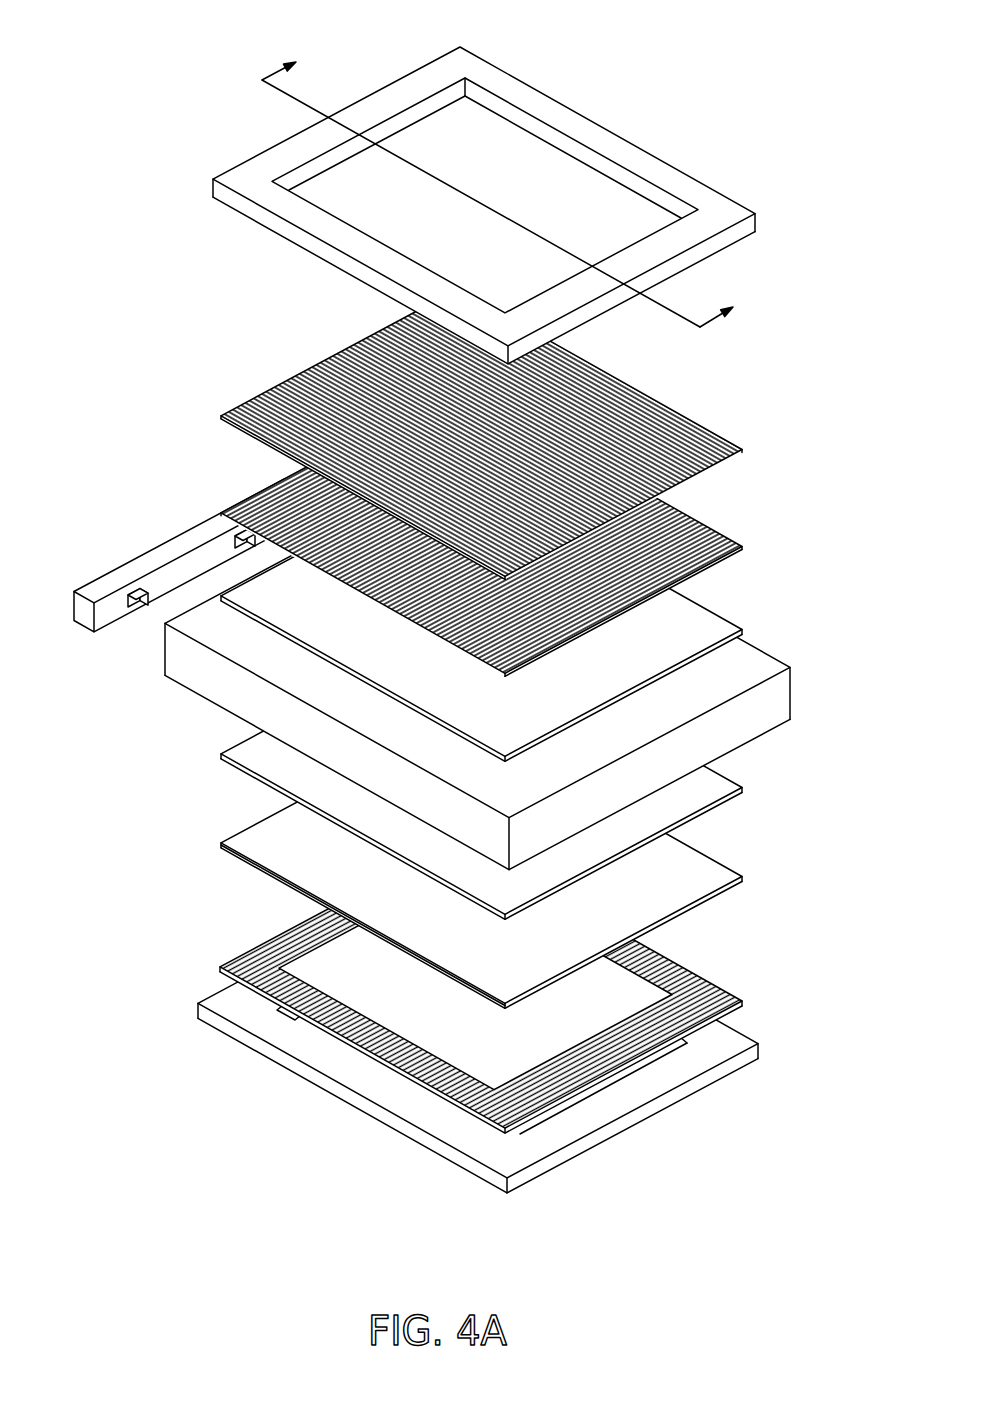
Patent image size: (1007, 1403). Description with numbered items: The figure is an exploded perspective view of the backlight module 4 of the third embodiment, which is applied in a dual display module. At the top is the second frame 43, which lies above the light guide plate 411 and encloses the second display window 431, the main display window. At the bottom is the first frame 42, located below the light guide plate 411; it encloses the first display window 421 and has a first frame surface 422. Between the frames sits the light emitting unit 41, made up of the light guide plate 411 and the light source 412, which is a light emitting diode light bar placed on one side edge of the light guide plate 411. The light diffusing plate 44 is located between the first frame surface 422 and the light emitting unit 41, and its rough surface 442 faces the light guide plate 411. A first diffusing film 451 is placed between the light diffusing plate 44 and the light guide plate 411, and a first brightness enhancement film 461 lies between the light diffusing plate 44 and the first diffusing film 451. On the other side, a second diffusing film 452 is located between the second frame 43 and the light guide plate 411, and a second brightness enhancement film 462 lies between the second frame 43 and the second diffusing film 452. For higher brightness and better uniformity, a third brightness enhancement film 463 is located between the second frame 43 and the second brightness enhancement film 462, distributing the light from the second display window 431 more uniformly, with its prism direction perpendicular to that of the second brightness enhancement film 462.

The backlight module 4 is at (804, 38).
The light emitting unit 41 is at (420, 671).
The light guide plate 411 is at (203, 673).
The light source 412 is at (113, 604).
The first frame 42 is at (517, 1031).
The first display window 421 is at (533, 1127).
The first frame surface 422 is at (630, 1102).
The second frame 43 is at (519, 205).
The second display window 431 is at (633, 212).
The light diffusing plate 44 is at (525, 986).
The rough surface 442 is at (742, 993).
The first diffusing film 451 is at (742, 789).
The second diffusing film 452 is at (742, 632).
The first brightness enhancement film 461 is at (742, 877).
The second brightness enhancement film 462 is at (742, 550).
The third brightness enhancement film 463 is at (742, 447).